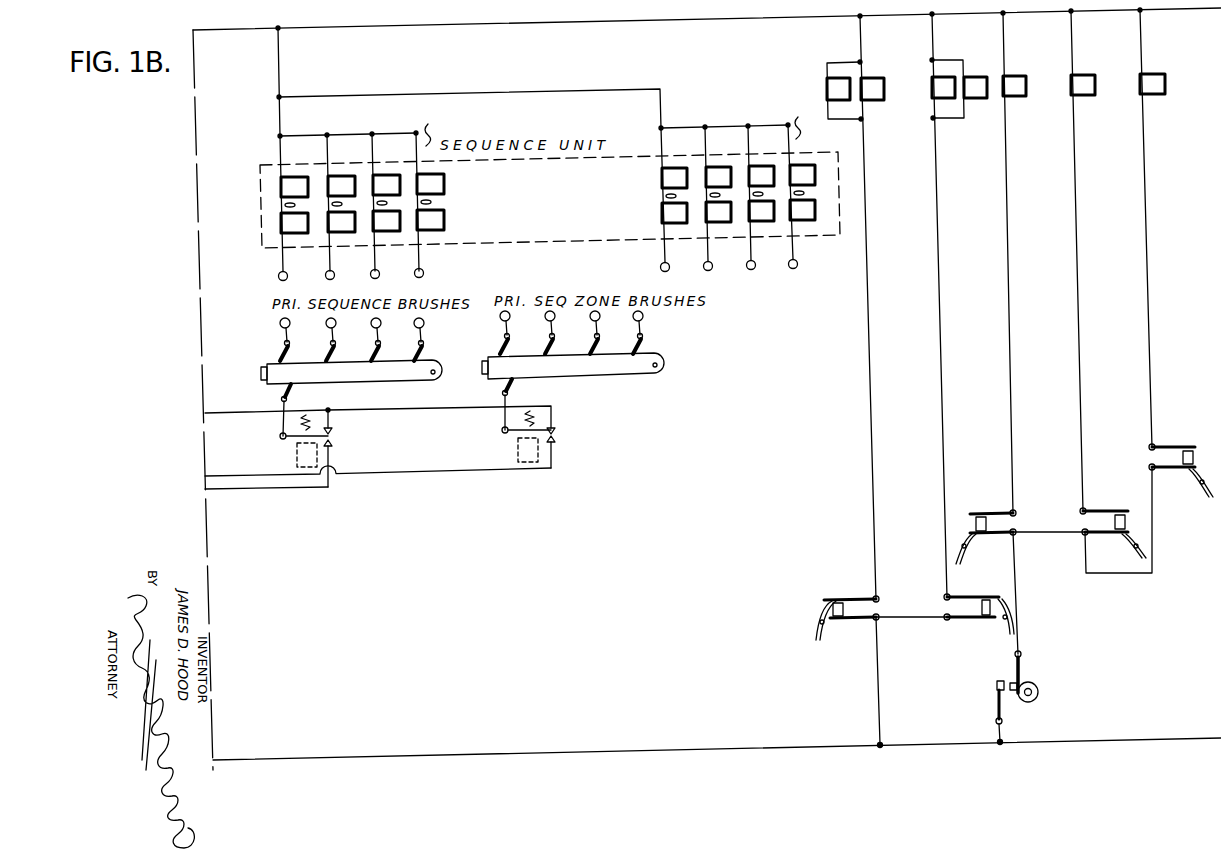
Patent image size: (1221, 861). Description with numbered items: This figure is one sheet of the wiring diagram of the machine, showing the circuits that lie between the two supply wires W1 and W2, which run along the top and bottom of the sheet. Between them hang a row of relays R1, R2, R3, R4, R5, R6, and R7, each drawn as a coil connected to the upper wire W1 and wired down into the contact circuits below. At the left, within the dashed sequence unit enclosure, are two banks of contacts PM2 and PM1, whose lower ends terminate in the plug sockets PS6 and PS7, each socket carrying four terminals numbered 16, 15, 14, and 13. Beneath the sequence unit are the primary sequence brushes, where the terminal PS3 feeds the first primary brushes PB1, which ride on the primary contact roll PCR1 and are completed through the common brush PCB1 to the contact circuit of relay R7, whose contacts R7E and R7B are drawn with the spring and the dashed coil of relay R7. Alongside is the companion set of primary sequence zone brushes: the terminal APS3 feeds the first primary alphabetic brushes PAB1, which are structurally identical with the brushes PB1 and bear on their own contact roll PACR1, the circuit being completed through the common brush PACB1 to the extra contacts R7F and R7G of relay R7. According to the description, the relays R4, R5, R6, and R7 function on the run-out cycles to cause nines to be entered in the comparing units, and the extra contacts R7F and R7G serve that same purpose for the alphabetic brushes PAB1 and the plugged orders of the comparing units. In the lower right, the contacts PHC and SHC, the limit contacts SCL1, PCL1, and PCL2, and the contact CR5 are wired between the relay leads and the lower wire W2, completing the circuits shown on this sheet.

The supply wire W1 is at (675, 17).
The supply wire W2 is at (615, 740).
The sequence unit contact bank PM1 is at (662, 214).
The sequence unit contact bank PM2 is at (444, 216).
The plug socket PS6 is at (414, 276).
The plug socket PS7 is at (788, 267).
The socket terminal 13 is at (594, 269).
The socket terminal 14 is at (551, 270).
The socket terminal 15 is at (506, 271).
The socket terminal 16 is at (461, 272).
The relay R1 is at (840, 78).
The relay R2 is at (874, 100).
The relay R3 is at (952, 80).
The relay R4 is at (977, 98).
The relay R5 is at (1016, 92).
The relay R6 is at (1085, 90).
The relay R7 is at (1153, 90).
The primary sequence brush terminal PS3 is at (424, 325).
The first primary brushes PB1 is at (426, 348).
The primary commutator roller PCR1 is at (380, 368).
The primary common brush PCB1 is at (292, 389).
The relay R7 contact R7E is at (338, 436).
The relay R7 contact R7B is at (338, 444).
The zone brush terminal APS3 is at (643, 315).
The first primary alphabetic brushes PAB1 is at (645, 342).
The contact roll PACR1 is at (620, 363).
The primary zone common brush PACB1 is at (514, 384).
The relay contact R7F is at (562, 432).
The relay contact R7G is at (562, 440).
The primary home contact PHC is at (856, 582).
The secondary home contact SHC is at (978, 607).
The secondary limit contact SCL1 is at (995, 513).
The primary limit contact PCL1 is at (1175, 452).
The primary limit contact PCL2 is at (1105, 516).
The control relay contact CR5 is at (1010, 681).